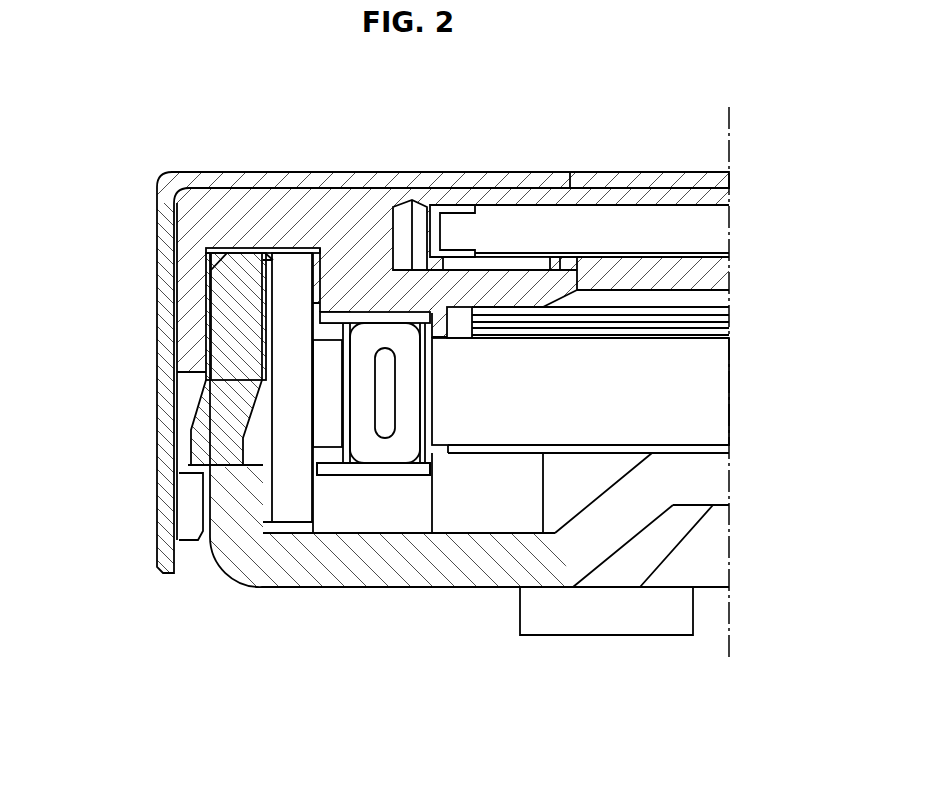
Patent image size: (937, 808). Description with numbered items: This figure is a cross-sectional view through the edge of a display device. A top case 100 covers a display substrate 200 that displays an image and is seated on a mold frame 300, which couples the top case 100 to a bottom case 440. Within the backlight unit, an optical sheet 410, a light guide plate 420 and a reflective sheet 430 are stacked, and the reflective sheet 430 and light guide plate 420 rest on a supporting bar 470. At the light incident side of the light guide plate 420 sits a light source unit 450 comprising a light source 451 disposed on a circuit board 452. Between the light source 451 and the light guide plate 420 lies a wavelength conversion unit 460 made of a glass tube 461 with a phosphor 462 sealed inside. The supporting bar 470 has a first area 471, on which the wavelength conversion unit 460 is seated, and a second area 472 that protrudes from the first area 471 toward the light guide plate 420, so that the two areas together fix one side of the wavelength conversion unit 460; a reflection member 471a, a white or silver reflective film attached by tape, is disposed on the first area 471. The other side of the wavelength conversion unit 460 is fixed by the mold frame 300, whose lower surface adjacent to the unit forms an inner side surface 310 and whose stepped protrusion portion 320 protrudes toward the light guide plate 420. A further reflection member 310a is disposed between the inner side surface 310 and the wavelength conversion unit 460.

The top case 100 is at (160, 215).
The display substrate 200 is at (712, 232).
The mold frame 300 is at (175, 243).
The inner side surface 310 is at (380, 313).
The reflection member 310a is at (350, 317).
The protrusion portion 320 is at (438, 323).
The optical sheet 410 is at (715, 320).
The light guide plate 420 is at (715, 395).
The reflective sheet 430 is at (718, 450).
The bottom case 440 is at (715, 483).
The light source unit 450 is at (175, 390).
The light source 451 is at (325, 428).
The circuit board 452 is at (290, 383).
The wavelength conversion unit 460 is at (293, 506).
The glass tube 461 is at (365, 425).
The phosphor 462 is at (385, 423).
The supporting bar 470 is at (505, 595).
The first area 471 is at (420, 488).
The reflection member 471a is at (388, 468).
The second area 472 is at (495, 462).